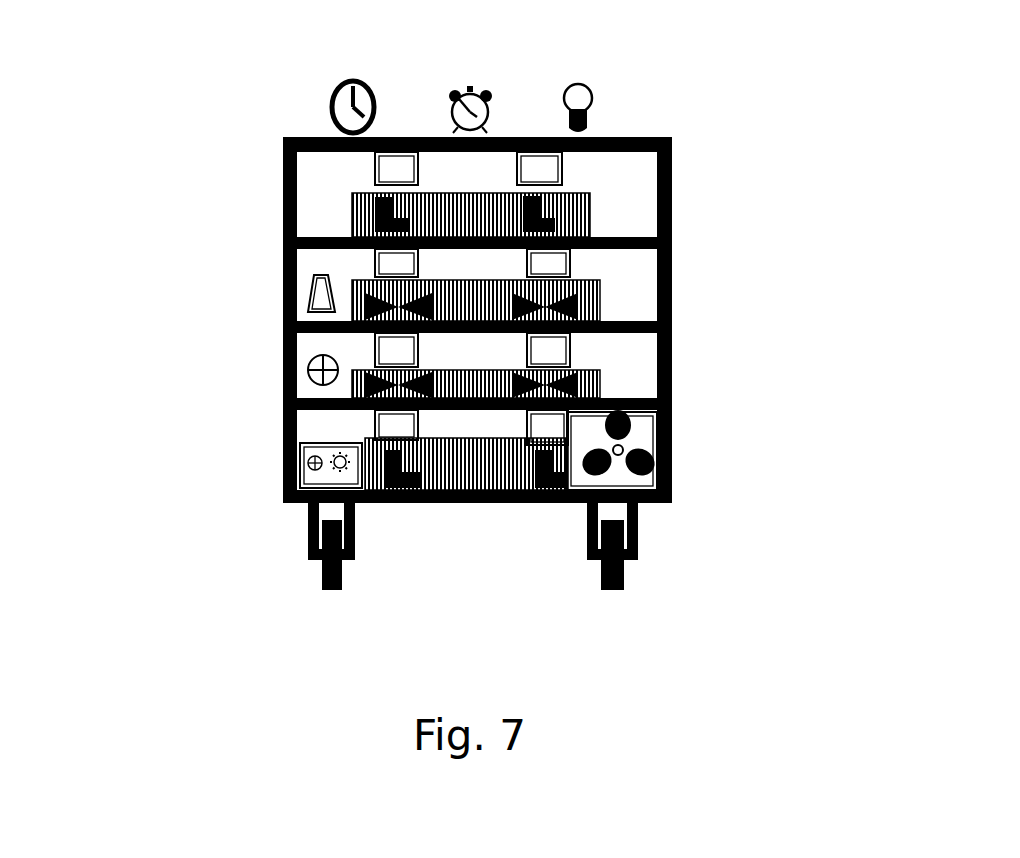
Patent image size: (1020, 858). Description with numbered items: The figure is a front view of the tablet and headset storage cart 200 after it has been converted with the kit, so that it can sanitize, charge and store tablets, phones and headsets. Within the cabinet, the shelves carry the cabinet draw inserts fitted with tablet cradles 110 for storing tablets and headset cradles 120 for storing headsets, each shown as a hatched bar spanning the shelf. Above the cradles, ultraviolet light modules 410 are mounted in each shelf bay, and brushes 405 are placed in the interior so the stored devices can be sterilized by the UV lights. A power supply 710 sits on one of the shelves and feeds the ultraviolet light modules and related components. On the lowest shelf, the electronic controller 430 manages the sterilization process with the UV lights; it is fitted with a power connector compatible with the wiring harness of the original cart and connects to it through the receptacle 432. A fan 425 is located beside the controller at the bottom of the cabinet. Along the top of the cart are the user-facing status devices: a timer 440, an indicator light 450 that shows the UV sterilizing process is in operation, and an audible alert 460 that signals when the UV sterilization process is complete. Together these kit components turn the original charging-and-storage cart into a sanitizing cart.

The tablet cradles 110 is at (575, 203).
The headset cradles 120 is at (595, 298).
The tablet and headset storage cart 200 is at (673, 367).
The brushes 405 is at (322, 185).
The ultraviolet light modules 410 is at (390, 265).
The fan 425 is at (658, 440).
The electronic controller 430 is at (283, 450).
The receptacle 432 is at (300, 365).
The timer 440 is at (312, 78).
The indicator light 450 is at (605, 97).
The audible alert 460 is at (492, 80).
The power supply 710 is at (300, 285).